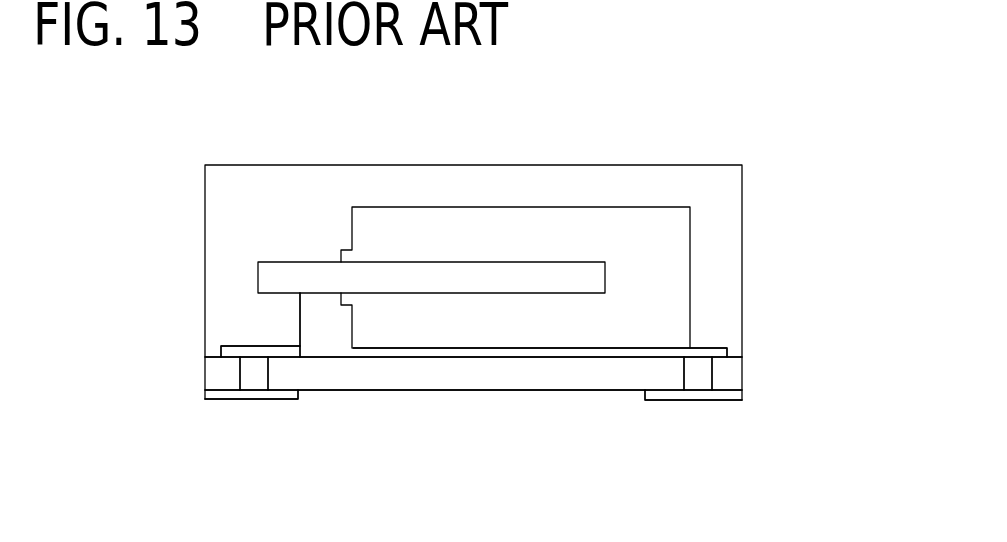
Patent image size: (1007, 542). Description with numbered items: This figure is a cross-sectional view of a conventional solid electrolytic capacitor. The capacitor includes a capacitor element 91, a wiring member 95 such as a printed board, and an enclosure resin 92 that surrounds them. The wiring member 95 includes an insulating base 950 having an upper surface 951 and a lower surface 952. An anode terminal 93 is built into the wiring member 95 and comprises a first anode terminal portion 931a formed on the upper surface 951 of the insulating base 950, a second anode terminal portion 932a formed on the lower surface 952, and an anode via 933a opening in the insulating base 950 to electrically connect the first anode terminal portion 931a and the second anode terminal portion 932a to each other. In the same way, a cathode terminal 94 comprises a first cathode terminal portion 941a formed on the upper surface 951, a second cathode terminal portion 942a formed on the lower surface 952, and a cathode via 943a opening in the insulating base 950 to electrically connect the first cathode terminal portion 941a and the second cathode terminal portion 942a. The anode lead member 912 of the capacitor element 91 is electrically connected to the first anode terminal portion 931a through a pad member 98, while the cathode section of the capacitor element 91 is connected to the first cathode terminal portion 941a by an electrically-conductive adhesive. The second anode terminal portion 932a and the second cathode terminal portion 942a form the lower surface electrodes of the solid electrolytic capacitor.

The capacitor element 91 is at (499, 223).
The enclosure resin 92 is at (662, 187).
The anode lead member 912 is at (297, 270).
The anode terminal 93 is at (88, 322).
The first anode terminal portion 931a is at (233, 350).
The second anode terminal portion 932a is at (235, 395).
The anode via 933a is at (252, 372).
The cathode terminal 94 is at (850, 323).
The first cathode terminal portion 941a is at (714, 349).
The second cathode terminal portion 942a is at (712, 397).
The cathode via 943a is at (702, 373).
The wiring member 95 is at (500, 380).
The insulating base 950 is at (572, 378).
The upper surface 951 is at (318, 346).
The lower surface 952 is at (395, 390).
The pad member 98 is at (272, 323).